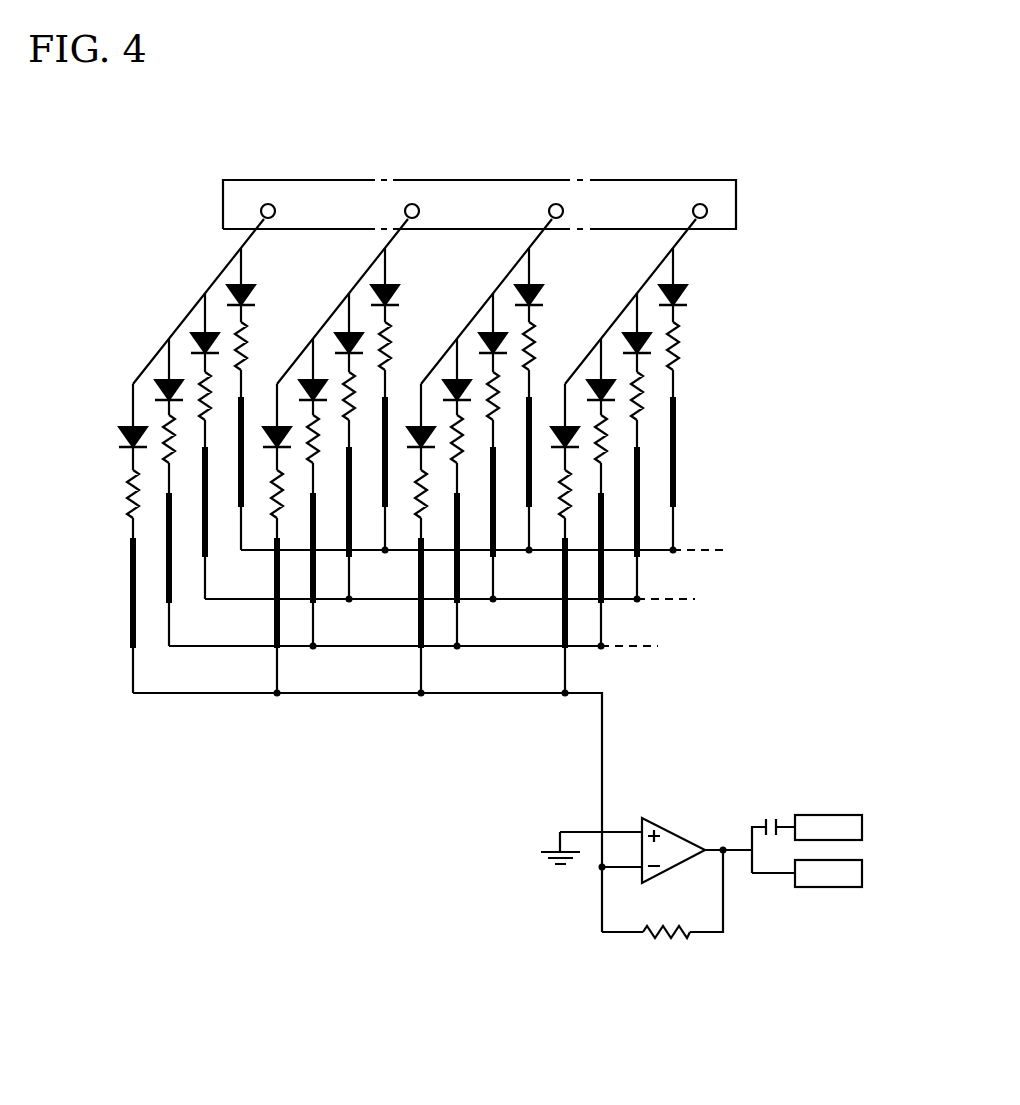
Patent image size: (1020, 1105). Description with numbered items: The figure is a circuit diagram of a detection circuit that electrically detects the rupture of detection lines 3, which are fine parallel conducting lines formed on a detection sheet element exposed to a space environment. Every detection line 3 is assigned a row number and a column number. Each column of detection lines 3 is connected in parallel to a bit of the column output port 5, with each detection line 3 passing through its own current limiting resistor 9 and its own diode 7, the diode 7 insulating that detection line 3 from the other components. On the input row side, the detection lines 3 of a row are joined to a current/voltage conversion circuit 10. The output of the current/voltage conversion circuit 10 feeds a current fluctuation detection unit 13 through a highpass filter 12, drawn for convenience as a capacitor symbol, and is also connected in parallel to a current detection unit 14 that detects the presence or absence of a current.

The detection line 3 is at (130, 578).
The column output port 5 is at (737, 205).
The diode 7 is at (118, 435).
The current limiting resistor 9 is at (122, 483).
The current/voltage conversion circuit 10 is at (592, 900).
The highpass filter 12 is at (775, 815).
The current fluctuation detection unit 13 is at (848, 815).
The current detection unit 14 is at (828, 890).